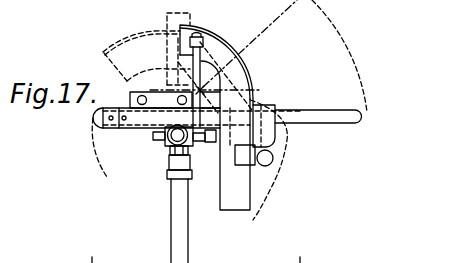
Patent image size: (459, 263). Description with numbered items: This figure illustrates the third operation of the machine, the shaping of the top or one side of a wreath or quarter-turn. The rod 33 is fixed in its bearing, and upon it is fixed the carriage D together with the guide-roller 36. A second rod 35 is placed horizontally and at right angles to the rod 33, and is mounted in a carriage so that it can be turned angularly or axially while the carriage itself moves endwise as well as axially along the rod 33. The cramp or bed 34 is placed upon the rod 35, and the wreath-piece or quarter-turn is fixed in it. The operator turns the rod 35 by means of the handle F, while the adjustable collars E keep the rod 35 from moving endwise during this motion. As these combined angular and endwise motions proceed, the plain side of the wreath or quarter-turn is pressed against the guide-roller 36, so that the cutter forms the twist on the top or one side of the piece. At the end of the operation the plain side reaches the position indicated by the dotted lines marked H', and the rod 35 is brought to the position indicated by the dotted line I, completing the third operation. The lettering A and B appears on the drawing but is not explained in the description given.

The bracket B is at (163, 17).
The dotted-line position H' is at (131, 56).
The guide-roller 36 is at (208, 55).
The carriage D is at (223, 56).
The rod 35 is at (318, 118).
The cramp or bed 34 is at (279, 141).
The handle F is at (109, 127).
The adjustable collars E is at (201, 127).
The dotted-line position I is at (155, 136).
The rod 33 is at (170, 150).
The support body A is at (244, 140).